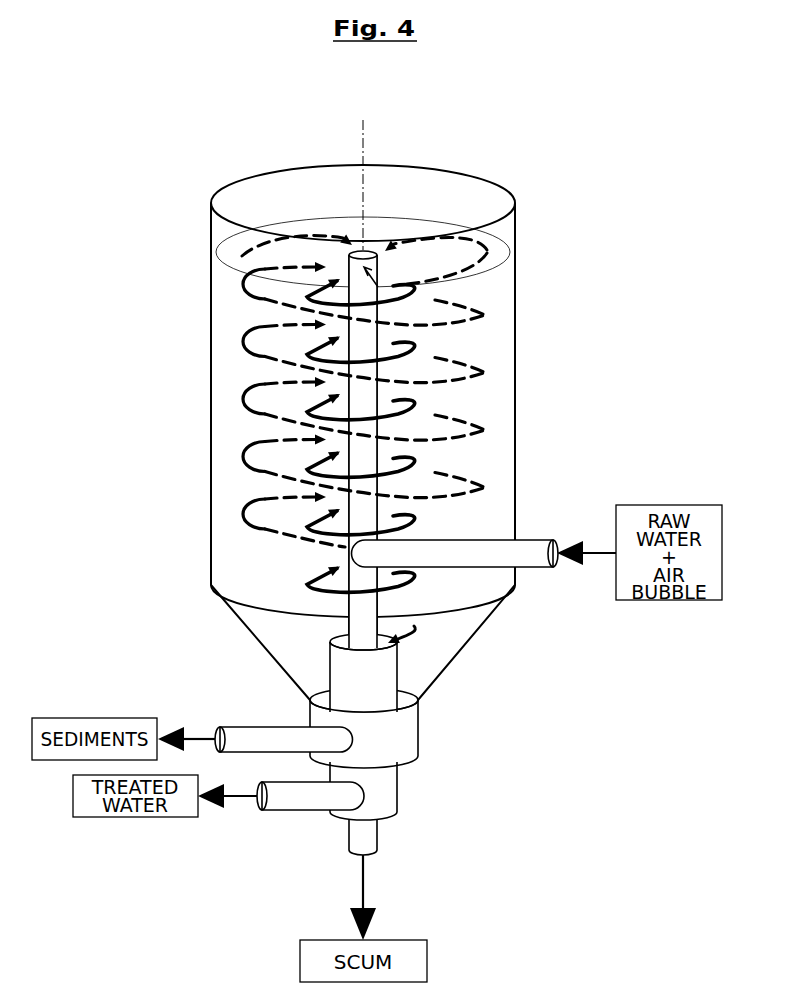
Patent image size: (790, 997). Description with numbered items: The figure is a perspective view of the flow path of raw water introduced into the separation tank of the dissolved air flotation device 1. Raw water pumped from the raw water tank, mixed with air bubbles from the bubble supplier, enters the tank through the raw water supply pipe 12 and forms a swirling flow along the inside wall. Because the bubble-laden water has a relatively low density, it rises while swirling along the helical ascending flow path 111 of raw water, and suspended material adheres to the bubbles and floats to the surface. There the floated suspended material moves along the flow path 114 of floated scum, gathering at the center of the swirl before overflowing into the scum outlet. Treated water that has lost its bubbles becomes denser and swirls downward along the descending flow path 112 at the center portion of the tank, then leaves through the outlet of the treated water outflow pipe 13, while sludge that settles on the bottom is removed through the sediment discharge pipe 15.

The dissolved air flotation device 1 is at (427, 163).
The raw water supply pipe 12 is at (543, 535).
The treated water outflow pipe 13 is at (410, 672).
The sediment discharge pipe 15 is at (237, 717).
The helical ascending flow path 111 is at (238, 403).
The descending flow path 112 is at (430, 452).
The flow path of floated scum 114 is at (238, 252).